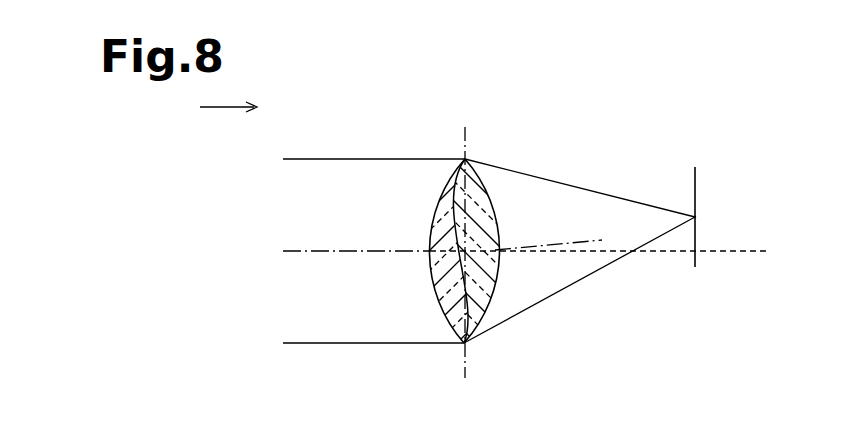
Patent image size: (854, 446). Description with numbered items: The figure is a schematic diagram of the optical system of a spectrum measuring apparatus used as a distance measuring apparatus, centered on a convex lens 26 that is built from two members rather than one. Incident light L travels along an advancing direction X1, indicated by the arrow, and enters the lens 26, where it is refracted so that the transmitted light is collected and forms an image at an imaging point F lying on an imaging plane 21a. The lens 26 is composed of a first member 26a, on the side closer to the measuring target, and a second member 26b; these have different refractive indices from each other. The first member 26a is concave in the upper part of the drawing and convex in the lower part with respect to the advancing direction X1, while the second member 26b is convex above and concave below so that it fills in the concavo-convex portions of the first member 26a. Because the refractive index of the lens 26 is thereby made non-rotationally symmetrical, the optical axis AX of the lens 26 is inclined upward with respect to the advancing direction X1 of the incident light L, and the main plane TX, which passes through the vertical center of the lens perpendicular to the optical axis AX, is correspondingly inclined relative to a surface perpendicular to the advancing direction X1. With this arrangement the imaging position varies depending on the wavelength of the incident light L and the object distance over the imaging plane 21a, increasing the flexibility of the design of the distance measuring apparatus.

The lens 26 is at (466, 255).
The first member 26a is at (439, 320).
The second member 26b is at (490, 320).
The imaging plane 21a is at (695, 174).
The incident light L is at (368, 158).
The main plane TX is at (464, 237).
The optical axis AX is at (558, 243).
The imaging point F is at (692, 222).
The advancing direction X1 is at (248, 109).